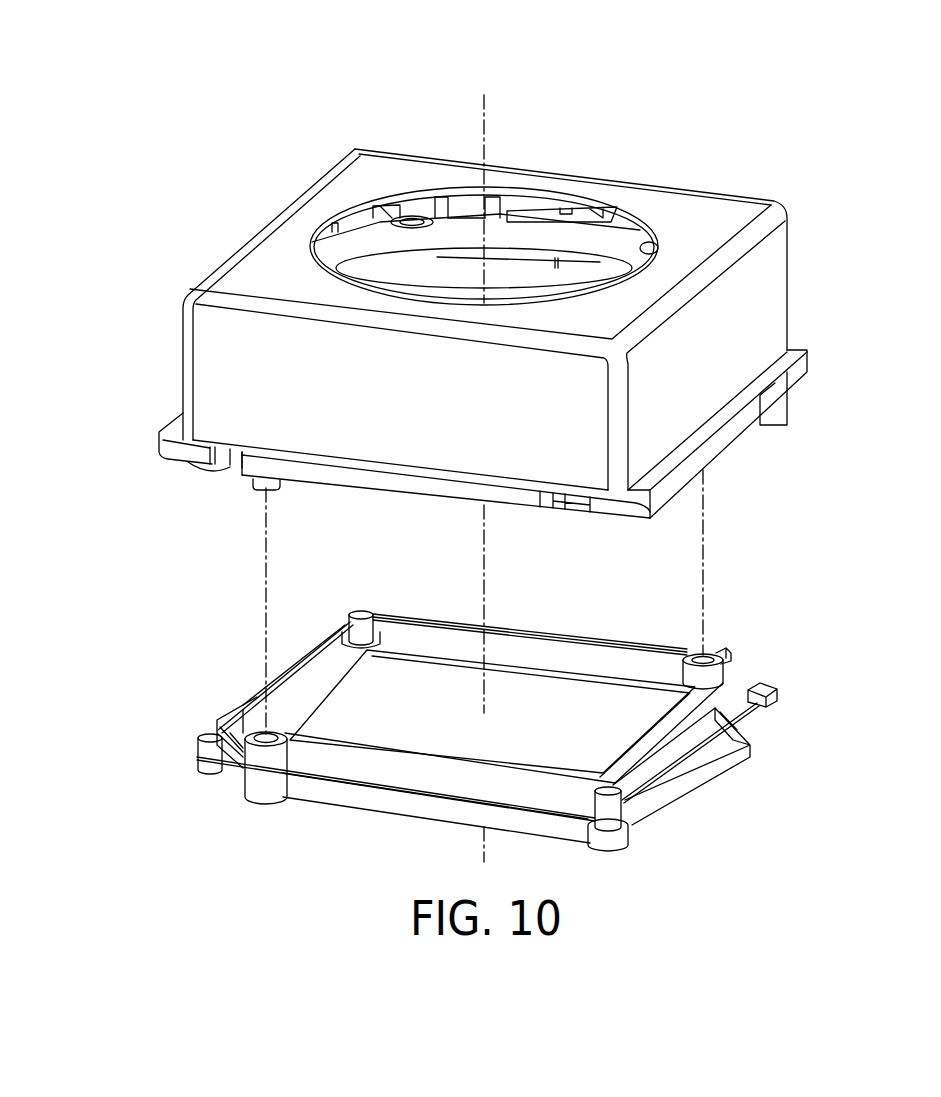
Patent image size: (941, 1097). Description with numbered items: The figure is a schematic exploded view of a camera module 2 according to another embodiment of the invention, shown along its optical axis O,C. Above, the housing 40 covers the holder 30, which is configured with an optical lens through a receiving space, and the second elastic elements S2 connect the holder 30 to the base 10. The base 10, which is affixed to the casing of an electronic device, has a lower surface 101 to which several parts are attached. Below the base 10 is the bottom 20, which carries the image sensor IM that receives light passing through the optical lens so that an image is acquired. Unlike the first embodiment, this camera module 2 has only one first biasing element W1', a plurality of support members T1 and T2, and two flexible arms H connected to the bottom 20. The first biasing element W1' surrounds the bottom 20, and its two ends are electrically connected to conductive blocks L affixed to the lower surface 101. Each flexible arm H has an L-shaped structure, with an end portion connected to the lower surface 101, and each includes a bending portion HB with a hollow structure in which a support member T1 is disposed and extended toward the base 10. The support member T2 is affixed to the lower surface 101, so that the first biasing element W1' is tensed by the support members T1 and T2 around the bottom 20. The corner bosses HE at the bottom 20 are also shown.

The camera module 2 is at (75, 101).
The housing 40 is at (787, 280).
The holder 30 is at (463, 205).
The second elastic elements S2 is at (362, 232).
The optical axis / center O,C is at (484, 462).
The base 10 is at (528, 440).
The lower surface 101 is at (735, 440).
The bottom 20 is at (508, 718).
The image sensor IM is at (423, 700).
The first biasing element W1' is at (478, 682).
The support members T1 is at (362, 617).
The support member T2 is at (205, 737).
The bending portion HB is at (345, 633).
The hole element HE is at (727, 673).
The flexible arms H is at (238, 707).
The conductive blocks L is at (717, 650).